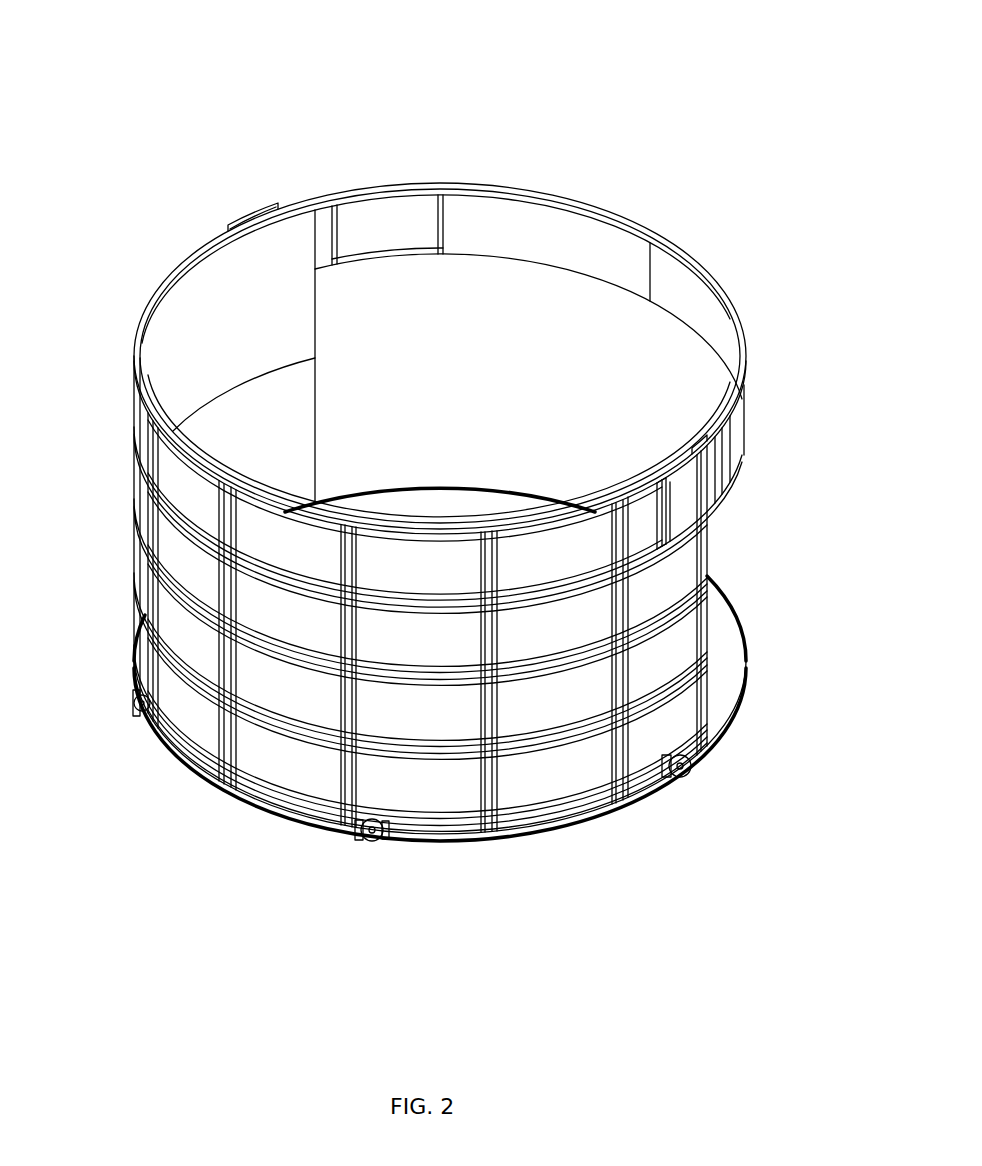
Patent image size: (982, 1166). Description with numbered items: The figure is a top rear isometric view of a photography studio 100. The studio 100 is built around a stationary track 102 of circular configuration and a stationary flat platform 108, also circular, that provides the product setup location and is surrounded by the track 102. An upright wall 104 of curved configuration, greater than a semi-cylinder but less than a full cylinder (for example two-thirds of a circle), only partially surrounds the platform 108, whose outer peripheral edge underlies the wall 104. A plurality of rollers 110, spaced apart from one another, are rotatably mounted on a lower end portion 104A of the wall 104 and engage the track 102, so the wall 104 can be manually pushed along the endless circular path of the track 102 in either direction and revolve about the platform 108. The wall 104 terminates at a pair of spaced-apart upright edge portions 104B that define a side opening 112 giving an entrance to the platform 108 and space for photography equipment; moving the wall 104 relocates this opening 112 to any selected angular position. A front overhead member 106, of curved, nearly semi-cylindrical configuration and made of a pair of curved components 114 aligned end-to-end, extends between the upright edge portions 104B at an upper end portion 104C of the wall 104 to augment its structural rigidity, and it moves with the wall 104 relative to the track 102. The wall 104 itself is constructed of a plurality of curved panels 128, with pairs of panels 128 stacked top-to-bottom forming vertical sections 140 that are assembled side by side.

The photography studio 100 is at (121, 82).
The stationary track 102 is at (230, 804).
The upright wall 104 is at (122, 298).
The lower end portion 104A is at (718, 713).
The upright edge portions 104B is at (318, 382).
The upper end portion 104C is at (276, 196).
The front overhead member 106 is at (623, 199).
The stationary flat platform 108 is at (460, 524).
The rollers 110 is at (700, 761).
The side opening 112 is at (562, 386).
The curved components 114 is at (496, 183).
The curved panels 128 is at (283, 314).
The vertical sections 140 is at (190, 256).